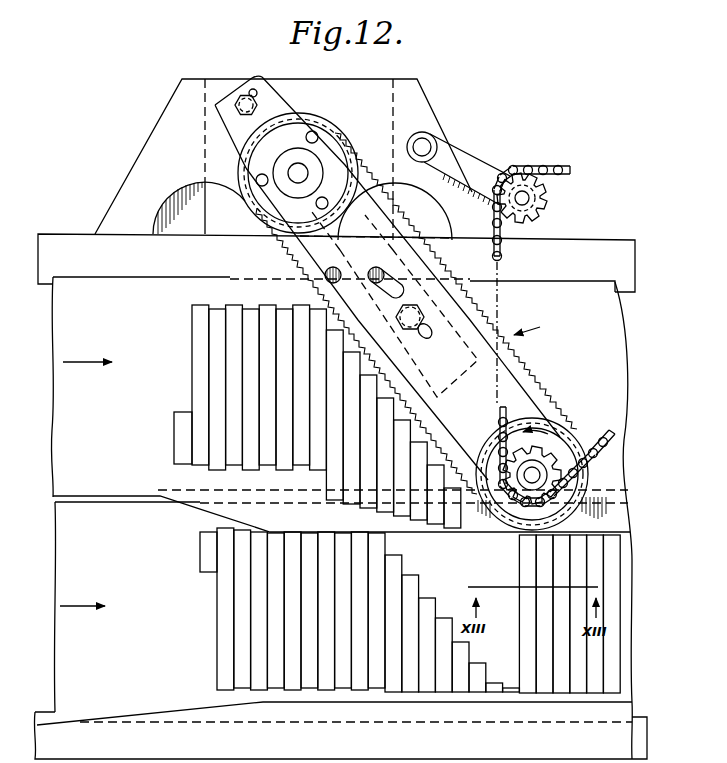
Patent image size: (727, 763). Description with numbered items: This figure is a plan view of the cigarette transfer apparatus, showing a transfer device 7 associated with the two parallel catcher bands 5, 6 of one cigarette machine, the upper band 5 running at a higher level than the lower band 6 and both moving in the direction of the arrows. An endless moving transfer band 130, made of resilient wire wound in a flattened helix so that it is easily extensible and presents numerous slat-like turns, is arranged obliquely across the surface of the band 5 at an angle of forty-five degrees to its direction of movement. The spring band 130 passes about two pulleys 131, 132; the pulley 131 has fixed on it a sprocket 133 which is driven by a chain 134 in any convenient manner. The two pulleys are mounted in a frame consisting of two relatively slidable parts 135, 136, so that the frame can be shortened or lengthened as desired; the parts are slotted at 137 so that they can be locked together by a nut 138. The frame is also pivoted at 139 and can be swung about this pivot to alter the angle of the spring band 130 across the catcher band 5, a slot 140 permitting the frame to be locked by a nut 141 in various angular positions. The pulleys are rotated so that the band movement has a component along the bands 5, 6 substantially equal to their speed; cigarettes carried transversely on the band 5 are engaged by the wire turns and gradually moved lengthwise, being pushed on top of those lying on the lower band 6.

The transfer band 130 is at (304, 281).
The pulley 131 is at (587, 487).
The pulley 132 is at (258, 209).
The sprocket 133 is at (540, 440).
The chain 134 is at (603, 440).
The frame part 135 is at (478, 395).
The frame part 136 is at (352, 210).
The slot 137 is at (397, 290).
The nut 138 is at (425, 339).
The pivot 139 is at (258, 93).
The slot 140 is at (253, 90).
The nut 141 is at (215, 105).
The catcher band 5 is at (94, 386).
The catcher band 6 is at (107, 618).
The transfer device 7 is at (527, 335).